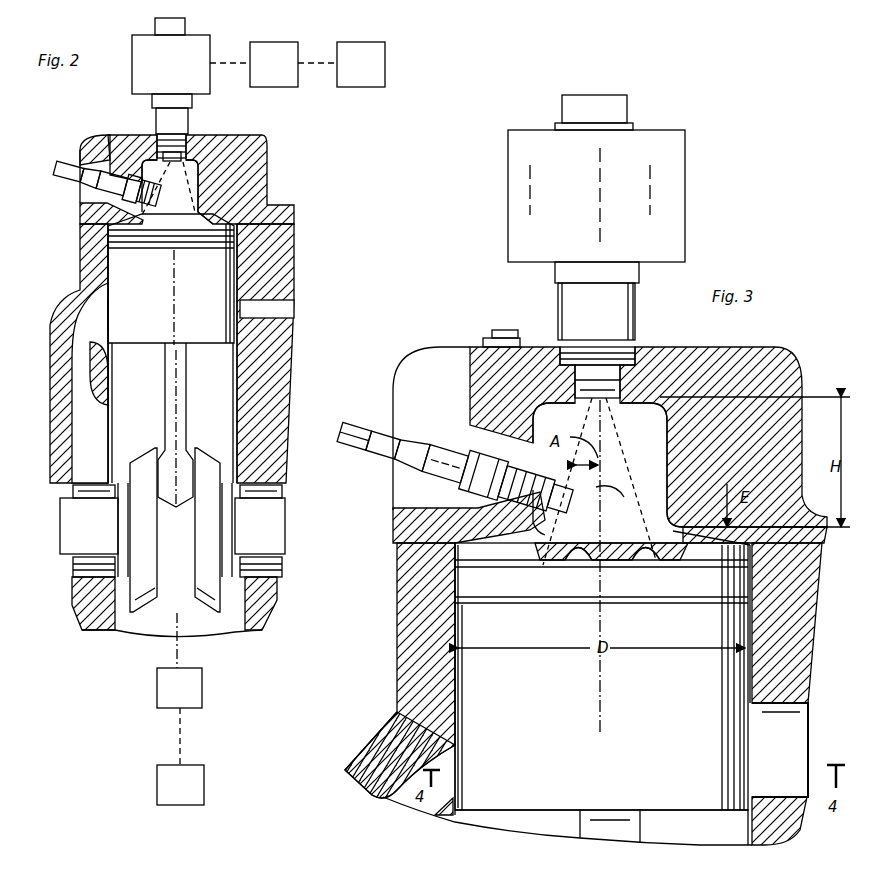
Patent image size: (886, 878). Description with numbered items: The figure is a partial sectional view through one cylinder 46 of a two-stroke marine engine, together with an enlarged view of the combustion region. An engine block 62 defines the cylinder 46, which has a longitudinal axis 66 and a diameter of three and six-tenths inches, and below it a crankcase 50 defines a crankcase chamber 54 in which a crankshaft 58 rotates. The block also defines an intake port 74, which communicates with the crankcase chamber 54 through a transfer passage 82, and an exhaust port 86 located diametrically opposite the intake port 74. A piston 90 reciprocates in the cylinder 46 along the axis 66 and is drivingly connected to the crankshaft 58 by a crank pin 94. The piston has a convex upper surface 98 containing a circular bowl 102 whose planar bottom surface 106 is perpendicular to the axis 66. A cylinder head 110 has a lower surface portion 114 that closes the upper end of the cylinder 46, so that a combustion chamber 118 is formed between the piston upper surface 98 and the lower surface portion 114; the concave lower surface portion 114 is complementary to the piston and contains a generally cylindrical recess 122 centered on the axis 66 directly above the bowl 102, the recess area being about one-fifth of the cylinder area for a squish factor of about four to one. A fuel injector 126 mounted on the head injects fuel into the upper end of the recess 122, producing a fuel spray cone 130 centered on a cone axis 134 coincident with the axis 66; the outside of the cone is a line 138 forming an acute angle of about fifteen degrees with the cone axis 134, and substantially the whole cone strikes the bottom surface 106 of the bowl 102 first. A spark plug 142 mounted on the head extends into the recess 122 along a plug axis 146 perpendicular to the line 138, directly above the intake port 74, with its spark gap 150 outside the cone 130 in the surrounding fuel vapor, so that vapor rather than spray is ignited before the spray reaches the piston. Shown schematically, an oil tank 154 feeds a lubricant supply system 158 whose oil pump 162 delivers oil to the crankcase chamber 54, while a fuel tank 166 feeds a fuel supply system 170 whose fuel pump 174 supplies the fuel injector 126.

In FIG. 2, the cylinder 46 is at (120, 270).
In FIG. 3, the cylinder 46 is at (467, 690).
In FIG. 2, the crankcase 50 is at (80, 605).
In FIG. 2, the crankcase chamber 54 is at (235, 627).
In FIG. 2, the crankshaft 58 is at (80, 536).
In FIG. 2, the engine block 62 is at (278, 249).
In FIG. 3, the engine block 62 is at (586, 686).
In FIG. 2, the longitudinal axis 66 is at (172, 322).
In FIG. 3, the longitudinal axis 66 is at (606, 718).
In FIG. 2, the intake port 74 is at (107, 323).
In FIG. 3, the intake port 74 is at (385, 800).
In FIG. 2, the transfer passage 82 is at (80, 369).
In FIG. 2, the exhaust port 86 is at (267, 309).
In FIG. 3, the exhaust port 86 is at (790, 703).
In FIG. 2, the piston 90 is at (213, 327).
In FIG. 3, the piston 90 is at (677, 792).
In FIG. 2, the crank pin 94 is at (172, 406).
In FIG. 3, the upper surface 98 is at (707, 530).
In FIG. 3, the circular bowl 102 is at (636, 560).
In FIG. 3, the planar bottom surface 106 is at (577, 542).
In FIG. 3, the cylinder head 110 is at (772, 357).
In FIG. 3, the lower surface portion 114 is at (453, 553).
In FIG. 3, the combustion chamber 118 is at (660, 462).
In FIG. 2, the recess 122 is at (198, 183).
In FIG. 3, the recess 122 is at (658, 432).
In FIG. 2, the fuel injector 126 is at (186, 73).
In FIG. 3, the fuel injector 126 is at (610, 203).
In FIG. 3, the fuel spray cone 130 is at (616, 433).
In FIG. 3, the cone axis 134 is at (616, 501).
In FIG. 3, the line 138 is at (585, 414).
In FIG. 2, the spark plug 142 is at (70, 165).
In FIG. 3, the spark plug 142 is at (430, 443).
In FIG. 3, the plug axis 146 is at (357, 437).
In FIG. 3, the spark gap 150 is at (543, 535).
In FIG. 2, the oil tank 154 is at (193, 794).
In FIG. 2, the lubricant supply system 158 is at (150, 721).
In FIG. 2, the oil pump 162 is at (193, 697).
In FIG. 2, the fuel tank 166 is at (375, 73).
In FIG. 2, the fuel supply system 170 is at (306, 40).
In FIG. 2, the fuel pump 174 is at (288, 73).